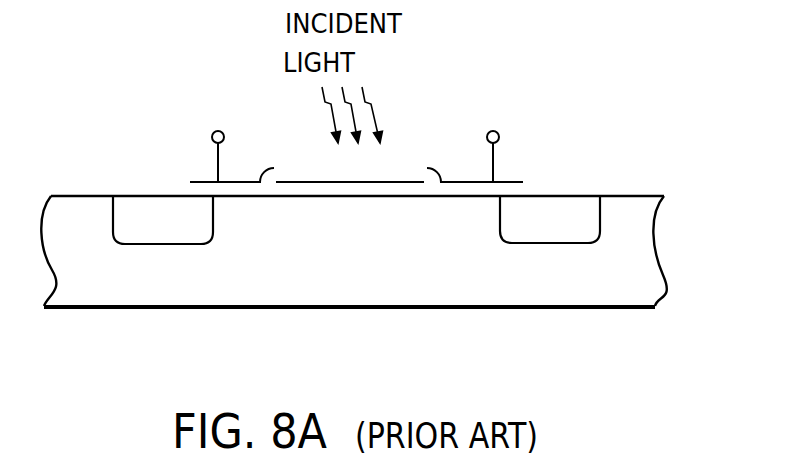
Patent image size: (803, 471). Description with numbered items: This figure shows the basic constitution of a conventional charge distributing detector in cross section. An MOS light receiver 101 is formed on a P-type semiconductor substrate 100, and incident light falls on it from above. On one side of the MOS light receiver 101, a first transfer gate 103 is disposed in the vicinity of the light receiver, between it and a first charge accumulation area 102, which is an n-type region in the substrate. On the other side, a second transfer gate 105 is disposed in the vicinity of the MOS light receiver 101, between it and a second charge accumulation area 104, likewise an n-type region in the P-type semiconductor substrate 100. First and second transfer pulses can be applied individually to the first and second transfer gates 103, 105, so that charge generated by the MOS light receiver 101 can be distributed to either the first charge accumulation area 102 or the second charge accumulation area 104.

The P-type semiconductor substrate 100 is at (413, 293).
The MOS light receiver 101 is at (399, 196).
The first charge accumulation area 102 is at (153, 196).
The first transfer gate 103 is at (243, 182).
The second charge accumulation area 104 is at (585, 196).
The second transfer gate 105 is at (512, 182).